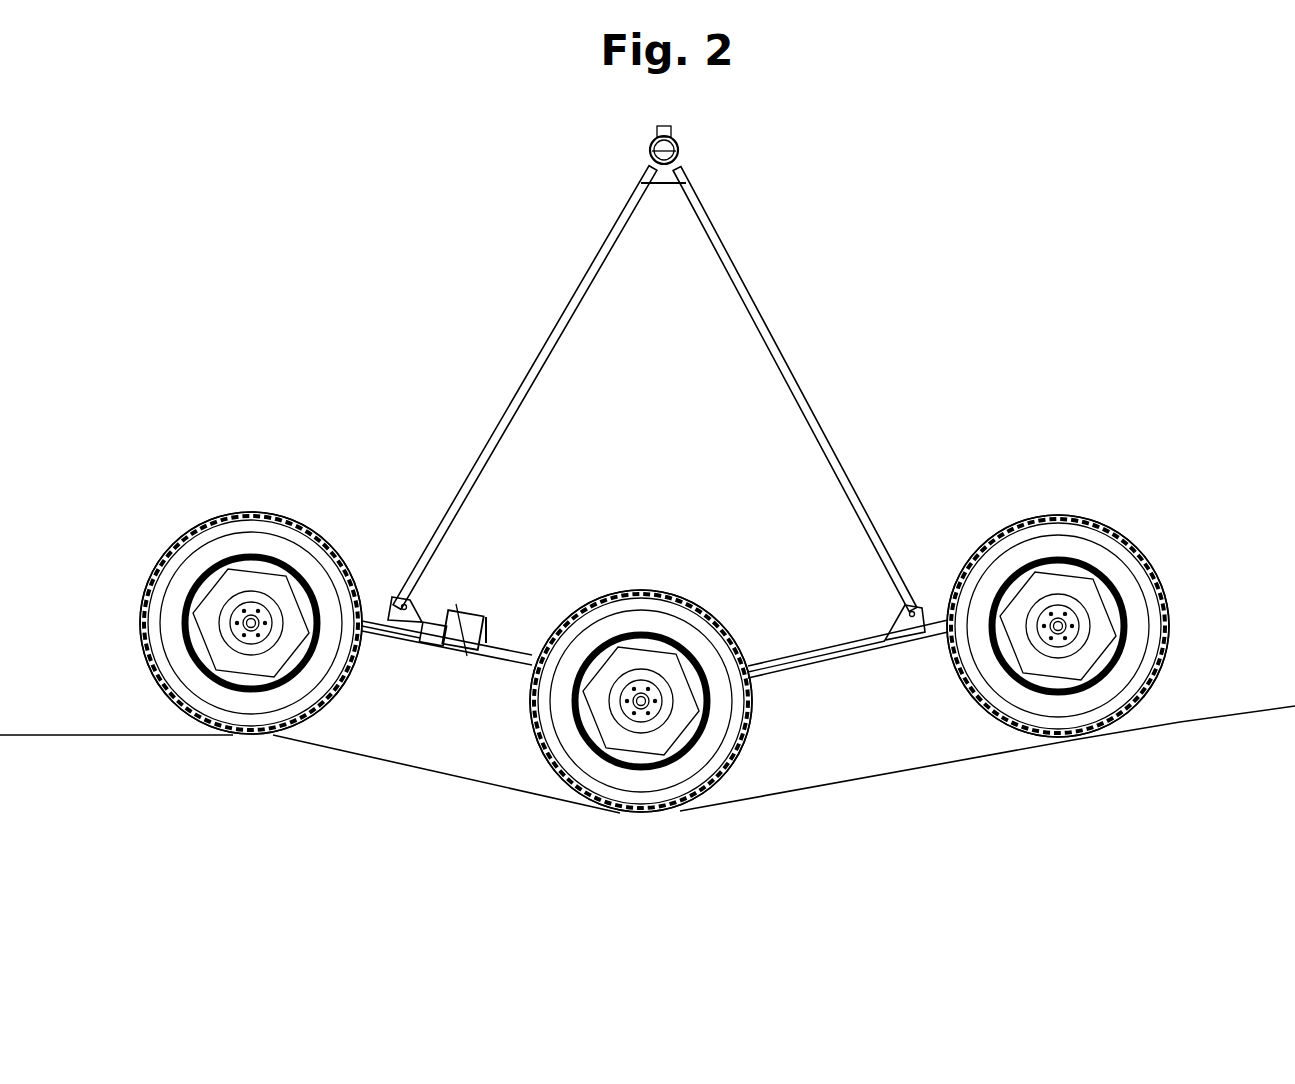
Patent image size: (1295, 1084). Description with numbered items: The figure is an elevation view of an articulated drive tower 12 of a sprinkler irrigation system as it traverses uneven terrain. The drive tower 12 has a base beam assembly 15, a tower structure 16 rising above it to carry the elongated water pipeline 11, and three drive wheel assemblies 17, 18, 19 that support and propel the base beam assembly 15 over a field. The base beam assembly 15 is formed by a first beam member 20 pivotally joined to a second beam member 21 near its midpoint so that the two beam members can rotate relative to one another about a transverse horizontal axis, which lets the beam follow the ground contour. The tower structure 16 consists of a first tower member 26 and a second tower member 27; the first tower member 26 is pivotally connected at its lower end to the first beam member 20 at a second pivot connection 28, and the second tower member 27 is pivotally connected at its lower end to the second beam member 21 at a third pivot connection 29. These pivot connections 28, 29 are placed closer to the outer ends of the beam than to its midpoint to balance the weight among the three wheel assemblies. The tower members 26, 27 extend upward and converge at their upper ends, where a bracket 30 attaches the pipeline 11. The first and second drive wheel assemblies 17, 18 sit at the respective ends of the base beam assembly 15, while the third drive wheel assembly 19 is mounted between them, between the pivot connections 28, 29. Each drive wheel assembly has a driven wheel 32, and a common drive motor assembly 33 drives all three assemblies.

The elongated pipeline 11 is at (668, 147).
The drive tower 12 is at (200, 295).
The base beam assembly 15 is at (838, 616).
The tower structure 16 is at (648, 389).
The first drive wheel assembly 17 is at (221, 739).
The second drive wheel assembly 18 is at (1075, 727).
The third drive wheel assembly 19 is at (624, 815).
The first beam member 20 is at (509, 637).
The second beam member 21 is at (836, 648).
The first tower member 26 is at (541, 356).
The second tower member 27 is at (768, 347).
The second pivot connection 28 is at (394, 598).
The third pivot connection 29 is at (916, 604).
The bracket 30 is at (655, 150).
The driven wheel 32 is at (205, 522).
The drive motor assembly 33 is at (462, 652).